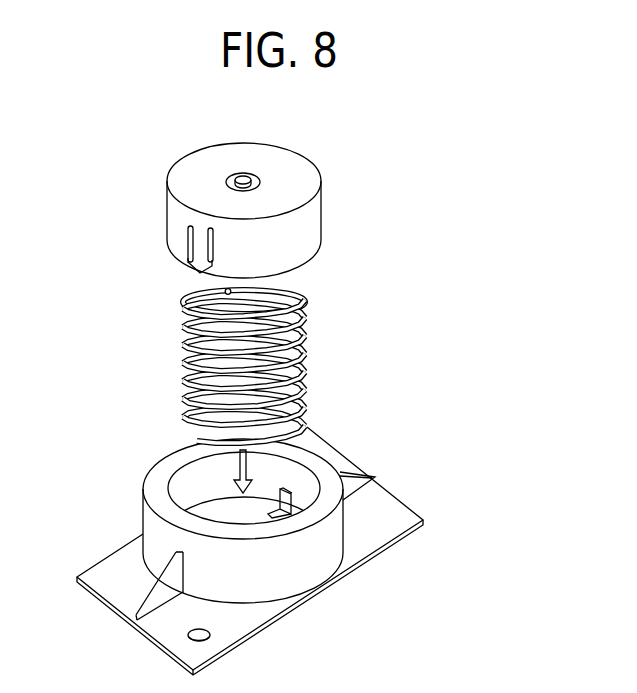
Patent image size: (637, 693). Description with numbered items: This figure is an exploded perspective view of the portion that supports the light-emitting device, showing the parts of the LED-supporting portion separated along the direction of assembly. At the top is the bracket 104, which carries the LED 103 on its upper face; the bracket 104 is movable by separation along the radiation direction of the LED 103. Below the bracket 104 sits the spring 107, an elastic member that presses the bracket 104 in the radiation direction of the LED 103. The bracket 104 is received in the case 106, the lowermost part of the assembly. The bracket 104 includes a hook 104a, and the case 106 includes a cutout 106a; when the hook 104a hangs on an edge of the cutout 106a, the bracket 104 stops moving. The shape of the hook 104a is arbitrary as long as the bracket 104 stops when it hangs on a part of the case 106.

The LED 103 is at (246, 173).
The bracket 104 is at (250, 217).
The hook 104a is at (178, 257).
The case 106 is at (332, 537).
The cutout 106a is at (288, 492).
The spring 107 is at (307, 297).